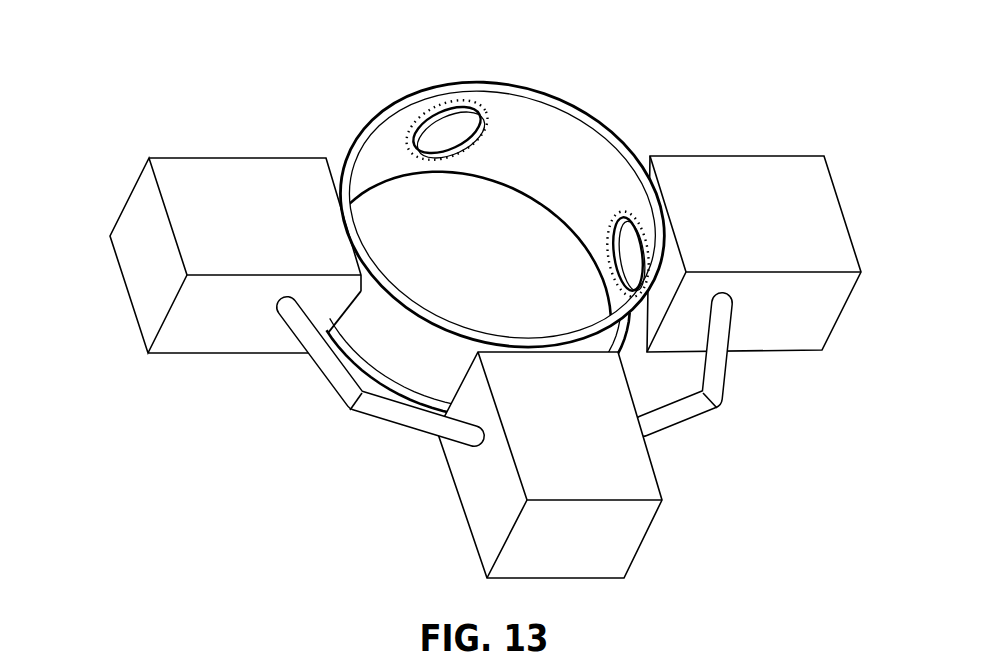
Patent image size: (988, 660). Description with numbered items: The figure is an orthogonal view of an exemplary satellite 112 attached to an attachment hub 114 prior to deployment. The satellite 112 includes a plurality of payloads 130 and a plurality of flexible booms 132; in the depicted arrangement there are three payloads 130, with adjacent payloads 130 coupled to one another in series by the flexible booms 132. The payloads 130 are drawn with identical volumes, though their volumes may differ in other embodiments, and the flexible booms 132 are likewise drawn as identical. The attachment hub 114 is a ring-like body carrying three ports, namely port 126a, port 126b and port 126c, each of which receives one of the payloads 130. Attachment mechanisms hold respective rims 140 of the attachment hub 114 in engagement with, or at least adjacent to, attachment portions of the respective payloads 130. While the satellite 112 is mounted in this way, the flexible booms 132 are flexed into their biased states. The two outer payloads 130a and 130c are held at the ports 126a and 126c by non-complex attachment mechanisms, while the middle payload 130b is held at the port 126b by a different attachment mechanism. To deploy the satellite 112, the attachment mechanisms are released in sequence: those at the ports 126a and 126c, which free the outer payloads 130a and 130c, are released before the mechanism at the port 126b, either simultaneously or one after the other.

The satellite 112 is at (484, 299).
The attachment hub 114 is at (502, 216).
The port 126a is at (611, 205).
The port 126b is at (541, 322).
The port 126c is at (376, 228).
The payload 130 is at (484, 299).
The outer payload 130a is at (848, 203).
The payload 130b is at (662, 511).
The outer payload 130c is at (127, 297).
The flexible boom 132 is at (559, 443).
The rim 140 is at (466, 140).